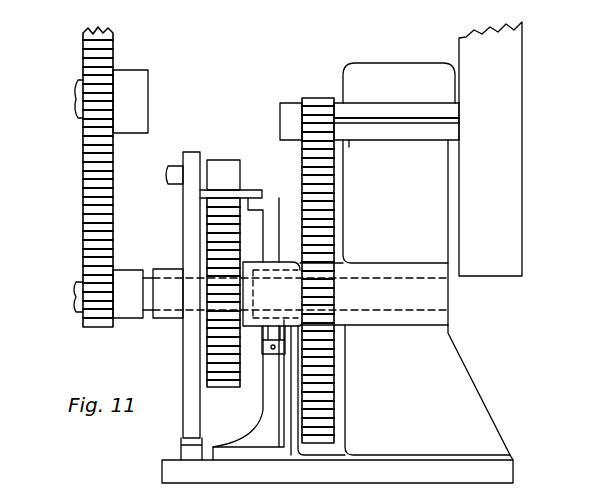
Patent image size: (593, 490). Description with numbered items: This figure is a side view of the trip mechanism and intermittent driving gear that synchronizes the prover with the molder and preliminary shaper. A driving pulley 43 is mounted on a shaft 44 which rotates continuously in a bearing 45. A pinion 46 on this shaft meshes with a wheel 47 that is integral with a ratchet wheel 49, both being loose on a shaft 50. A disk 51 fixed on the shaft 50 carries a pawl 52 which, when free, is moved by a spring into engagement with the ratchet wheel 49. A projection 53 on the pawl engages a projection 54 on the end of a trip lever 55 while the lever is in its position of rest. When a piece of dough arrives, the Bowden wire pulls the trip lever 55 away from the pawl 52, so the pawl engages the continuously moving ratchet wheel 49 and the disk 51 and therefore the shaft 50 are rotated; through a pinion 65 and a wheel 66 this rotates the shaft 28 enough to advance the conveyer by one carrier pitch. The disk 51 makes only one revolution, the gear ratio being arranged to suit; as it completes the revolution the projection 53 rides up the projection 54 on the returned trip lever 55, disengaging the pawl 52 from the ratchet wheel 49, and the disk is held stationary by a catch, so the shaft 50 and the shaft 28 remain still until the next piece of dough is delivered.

The shaft 28 is at (75, 111).
The driving pulley 43 is at (490, 149).
The shaft 44 is at (284, 123).
The bearing 45 is at (418, 124).
The pinion 46 is at (314, 102).
The wheel 47 is at (318, 210).
The ratchet wheel 49 is at (216, 348).
The shaft 50 is at (153, 318).
The disk 51 is at (195, 217).
The pawl 52 is at (224, 172).
The projection 53 is at (247, 205).
The projection 54 is at (266, 225).
The trip lever 55 is at (272, 230).
The pinion 65 is at (95, 328).
The wheel 66 is at (92, 198).